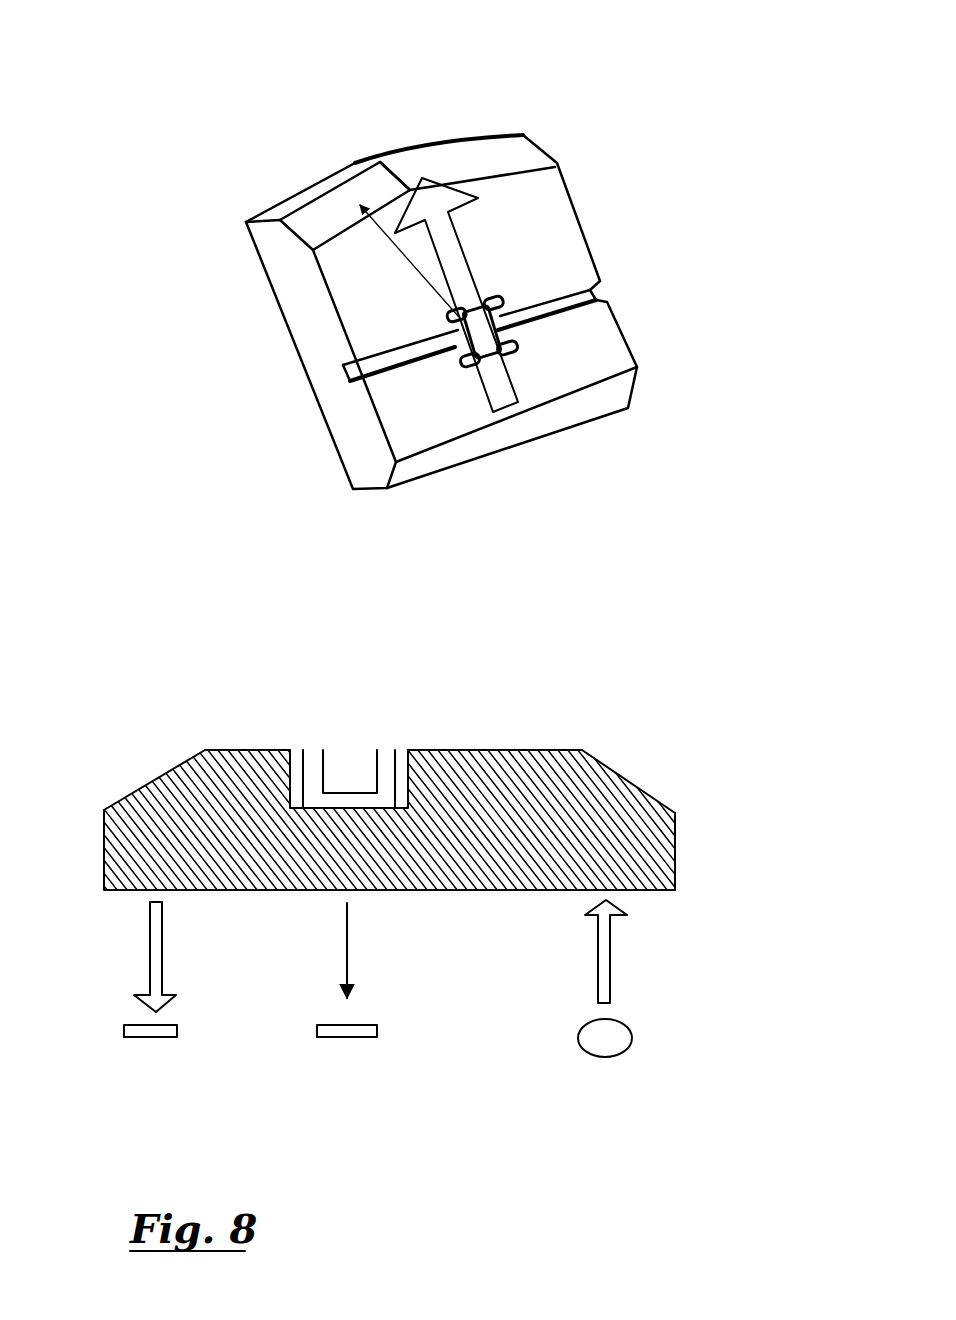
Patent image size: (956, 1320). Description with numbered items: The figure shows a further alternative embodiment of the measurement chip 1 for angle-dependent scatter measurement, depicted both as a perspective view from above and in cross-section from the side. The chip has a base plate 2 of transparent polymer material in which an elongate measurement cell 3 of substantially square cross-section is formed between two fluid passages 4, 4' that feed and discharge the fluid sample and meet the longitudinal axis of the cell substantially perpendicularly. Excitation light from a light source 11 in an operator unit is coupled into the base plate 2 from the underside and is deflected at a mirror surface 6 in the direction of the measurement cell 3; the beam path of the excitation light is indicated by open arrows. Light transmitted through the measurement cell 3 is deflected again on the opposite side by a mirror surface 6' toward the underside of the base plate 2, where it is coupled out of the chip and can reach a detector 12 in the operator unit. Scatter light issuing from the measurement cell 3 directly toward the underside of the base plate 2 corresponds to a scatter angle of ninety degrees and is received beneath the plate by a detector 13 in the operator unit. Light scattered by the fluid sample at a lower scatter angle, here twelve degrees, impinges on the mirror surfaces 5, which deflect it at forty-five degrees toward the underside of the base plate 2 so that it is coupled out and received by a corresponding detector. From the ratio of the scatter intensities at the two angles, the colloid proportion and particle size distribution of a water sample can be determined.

The measurement chip 1 is at (645, 130).
The base plate 2 is at (501, 287).
The measurement cell 3 is at (488, 170).
The fluid passage 4 is at (342, 437).
The fluid passage 4' is at (610, 402).
The mirror surfaces 5 is at (318, 213).
The mirror surface 6 is at (535, 590).
The mirror surface 6' is at (306, 410).
The light source 11 is at (603, 1043).
The detector 12 is at (146, 1033).
The detector 13 is at (346, 1033).